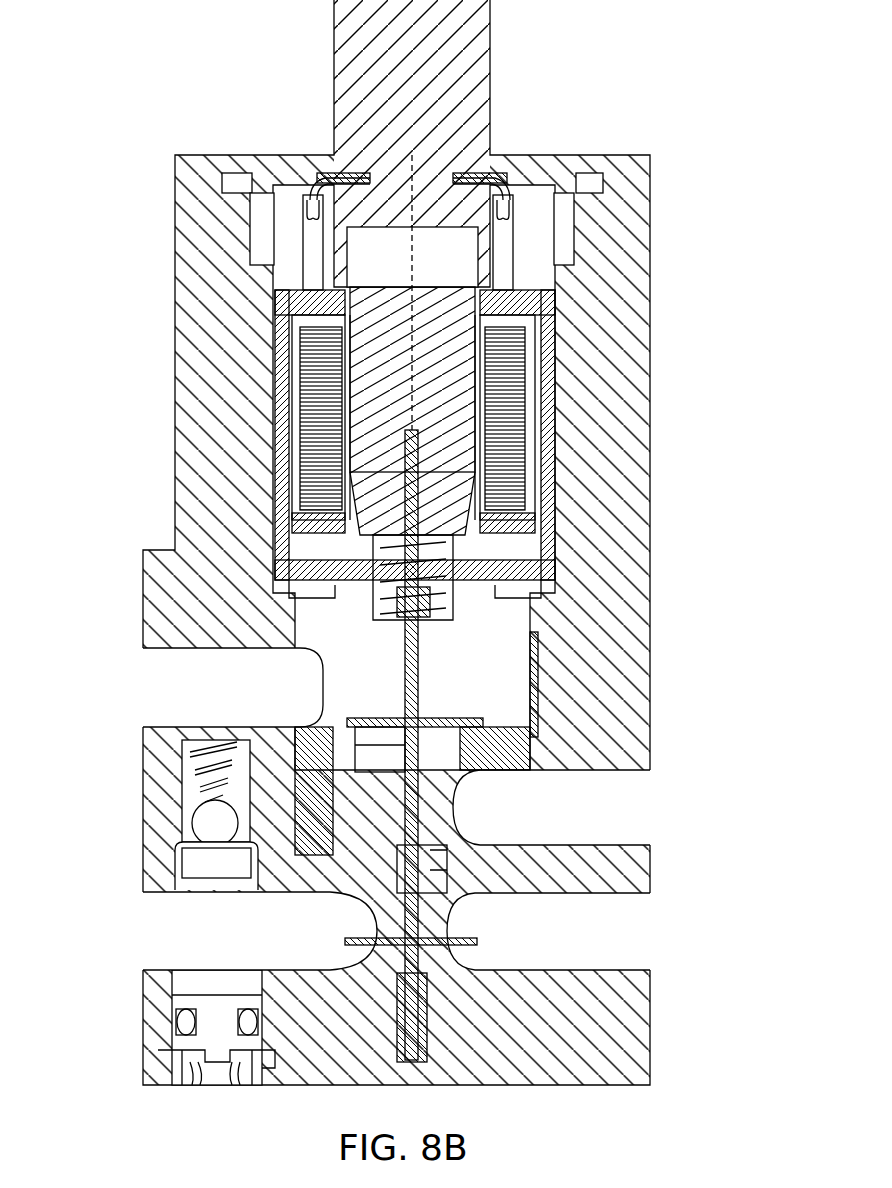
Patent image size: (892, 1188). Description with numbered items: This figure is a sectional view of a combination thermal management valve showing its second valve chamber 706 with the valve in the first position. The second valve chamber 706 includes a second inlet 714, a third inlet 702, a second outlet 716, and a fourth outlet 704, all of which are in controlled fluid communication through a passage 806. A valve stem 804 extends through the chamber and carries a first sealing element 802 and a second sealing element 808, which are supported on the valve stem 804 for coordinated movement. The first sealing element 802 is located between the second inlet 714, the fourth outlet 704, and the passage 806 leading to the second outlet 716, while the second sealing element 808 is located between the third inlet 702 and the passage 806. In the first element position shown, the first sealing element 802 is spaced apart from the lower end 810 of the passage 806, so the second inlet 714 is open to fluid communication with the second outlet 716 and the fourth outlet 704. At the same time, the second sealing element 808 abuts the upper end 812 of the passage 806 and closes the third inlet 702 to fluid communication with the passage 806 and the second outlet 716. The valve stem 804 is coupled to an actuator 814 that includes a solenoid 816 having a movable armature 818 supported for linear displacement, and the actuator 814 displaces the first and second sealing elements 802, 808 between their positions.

The third inlet 702 is at (143, 683).
The fourth outlet 704 is at (143, 920).
The second valve chamber 706 is at (650, 318).
The second inlet 714 is at (650, 930).
The second outlet 716 is at (650, 808).
The first sealing element 802 is at (447, 930).
The valve stem 804 is at (523, 735).
The passage 806 is at (350, 815).
The second sealing element 808 is at (372, 718).
The lower end 810 is at (483, 847).
The upper end 812 is at (370, 750).
The actuator 814 is at (572, 378).
The solenoid 816 is at (273, 423).
The movable armature 818 is at (370, 337).